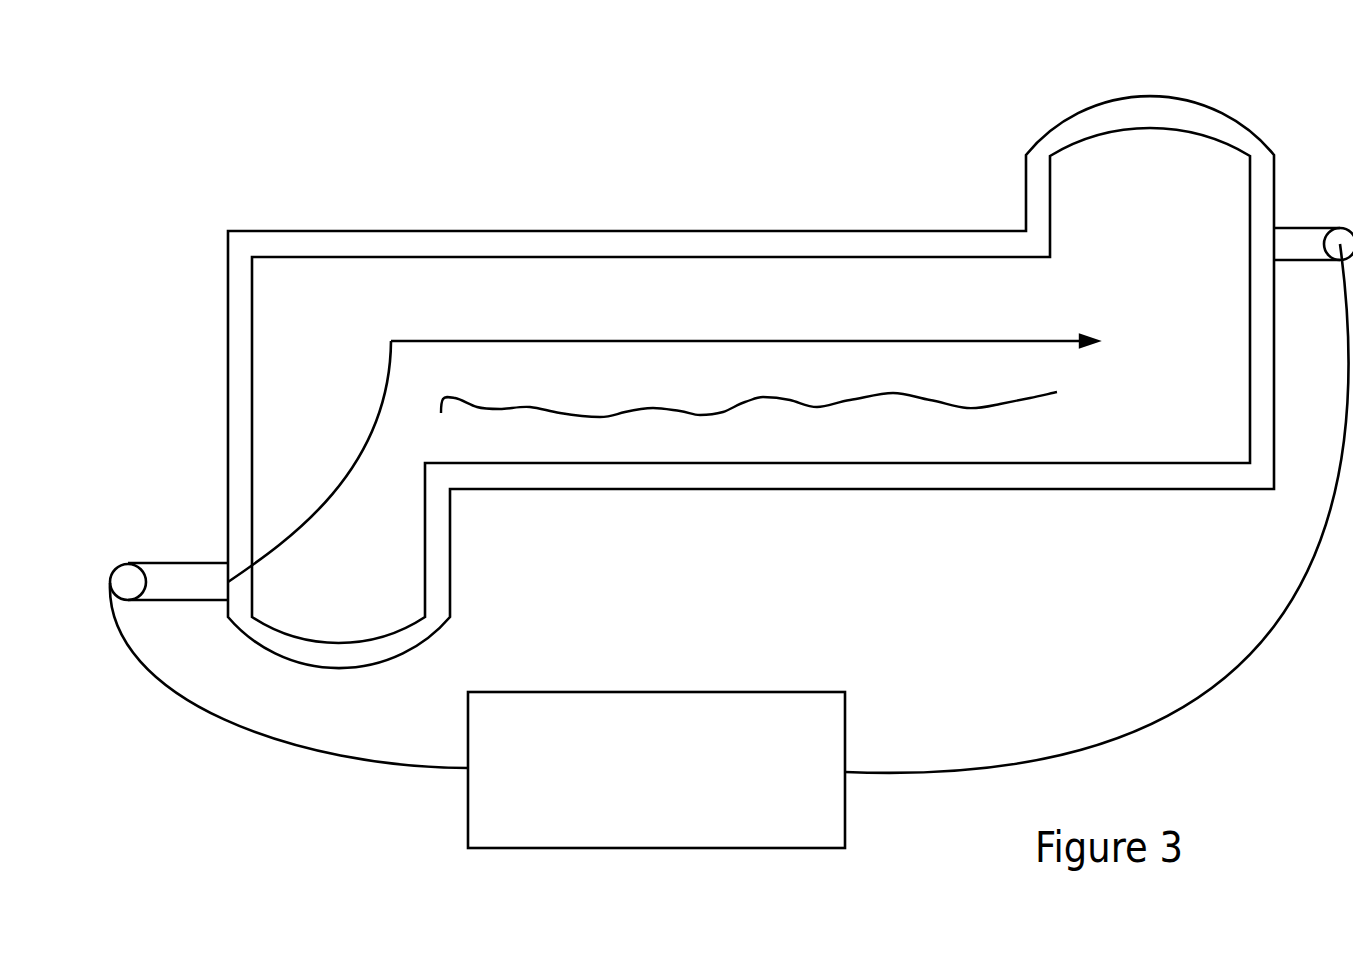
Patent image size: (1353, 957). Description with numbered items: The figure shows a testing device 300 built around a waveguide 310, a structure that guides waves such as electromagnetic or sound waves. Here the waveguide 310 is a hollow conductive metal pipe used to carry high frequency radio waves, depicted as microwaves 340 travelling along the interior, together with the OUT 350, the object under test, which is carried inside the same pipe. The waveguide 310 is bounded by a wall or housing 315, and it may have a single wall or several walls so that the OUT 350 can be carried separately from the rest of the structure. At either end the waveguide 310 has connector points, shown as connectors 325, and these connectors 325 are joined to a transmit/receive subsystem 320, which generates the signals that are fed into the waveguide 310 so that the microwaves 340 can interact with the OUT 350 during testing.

The testing device 300 is at (972, 107).
The waveguide 310 is at (630, 231).
The wall or housing 315 is at (775, 257).
The transmit/receive subsystem 320 is at (468, 822).
The connectors 325 is at (152, 562).
The microwaves 340 is at (500, 338).
The OUT (object under test) 350 is at (725, 412).